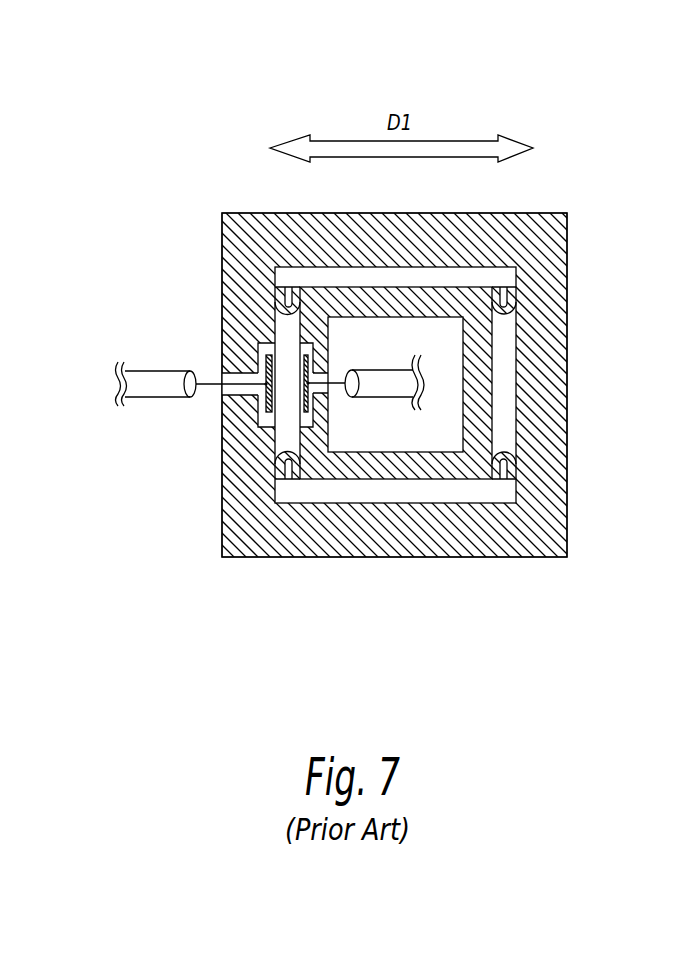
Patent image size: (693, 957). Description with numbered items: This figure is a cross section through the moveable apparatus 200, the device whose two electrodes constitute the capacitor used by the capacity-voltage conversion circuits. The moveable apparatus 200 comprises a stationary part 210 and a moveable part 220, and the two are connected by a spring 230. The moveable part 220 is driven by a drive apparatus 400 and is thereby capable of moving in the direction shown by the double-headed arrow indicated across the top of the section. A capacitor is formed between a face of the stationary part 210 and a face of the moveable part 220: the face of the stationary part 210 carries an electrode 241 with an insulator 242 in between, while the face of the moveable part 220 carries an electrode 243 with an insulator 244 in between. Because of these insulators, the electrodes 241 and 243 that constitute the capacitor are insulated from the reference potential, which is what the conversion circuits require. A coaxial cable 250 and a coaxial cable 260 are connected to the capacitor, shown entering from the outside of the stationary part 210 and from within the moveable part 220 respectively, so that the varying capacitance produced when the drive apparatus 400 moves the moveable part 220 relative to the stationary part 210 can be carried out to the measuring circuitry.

The moveable apparatus 200 is at (167, 40).
The stationary part 210 is at (557, 280).
The moveable part 220 is at (405, 465).
The spring 230 is at (286, 282).
The electrode 241 is at (301, 394).
The insulator 242 is at (222, 379).
The electrode 243 is at (287, 410).
The insulator 244 is at (325, 377).
The coaxial cable 250 is at (168, 372).
The coaxial cable 260 is at (410, 360).
The drive apparatus 400 is at (514, 372).